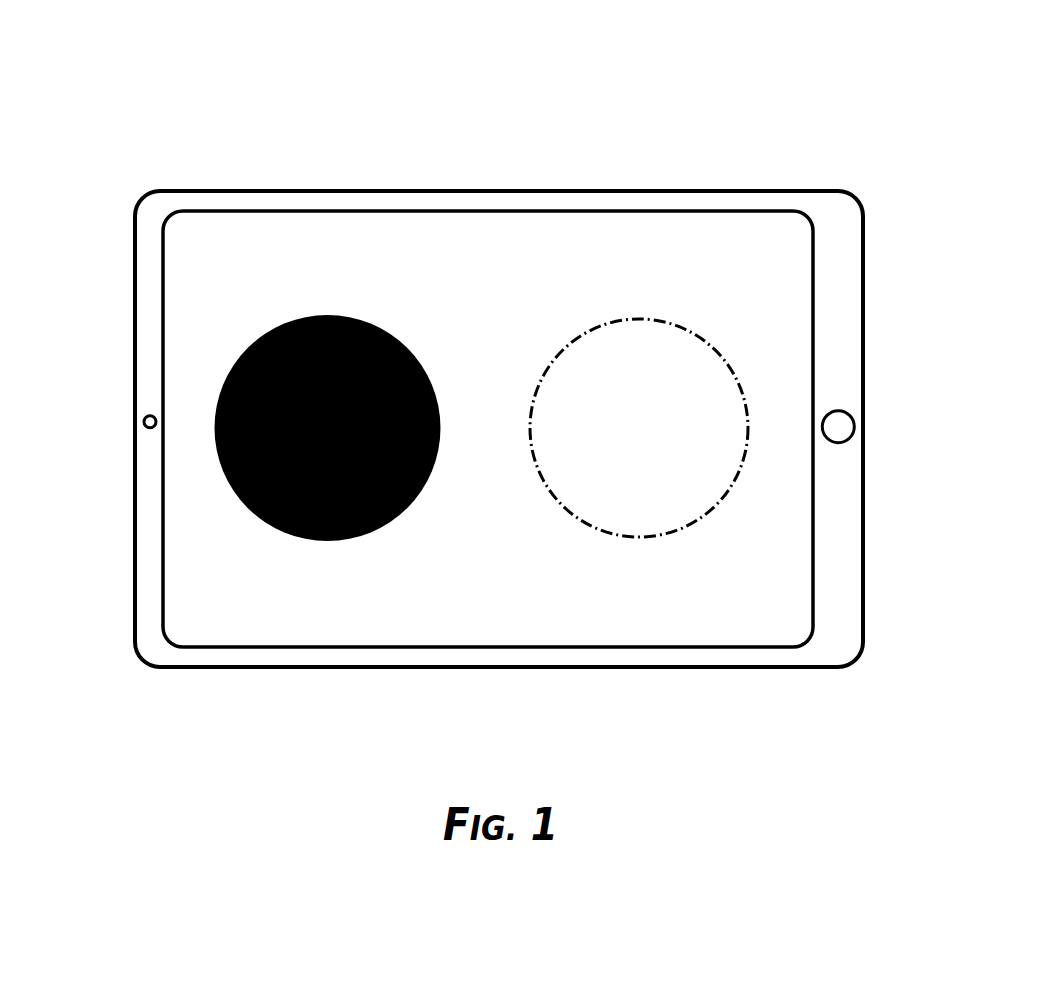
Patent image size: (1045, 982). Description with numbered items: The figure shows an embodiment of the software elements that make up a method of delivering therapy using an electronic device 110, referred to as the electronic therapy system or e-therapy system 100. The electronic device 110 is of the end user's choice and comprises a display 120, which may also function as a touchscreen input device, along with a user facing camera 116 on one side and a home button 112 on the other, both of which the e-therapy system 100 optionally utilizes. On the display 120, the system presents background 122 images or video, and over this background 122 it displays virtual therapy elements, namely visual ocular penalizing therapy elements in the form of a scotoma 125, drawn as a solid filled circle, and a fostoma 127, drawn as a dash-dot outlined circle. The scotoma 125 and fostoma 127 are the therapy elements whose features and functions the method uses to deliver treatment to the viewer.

The electronic therapy system 100 is at (290, 50).
The electronic device 110 is at (840, 605).
The home button 112 is at (843, 423).
The user facing camera 116 is at (143, 422).
The display 120 is at (268, 210).
The background 122 is at (717, 258).
The scotoma 125 is at (392, 522).
The fostoma 127 is at (663, 533).